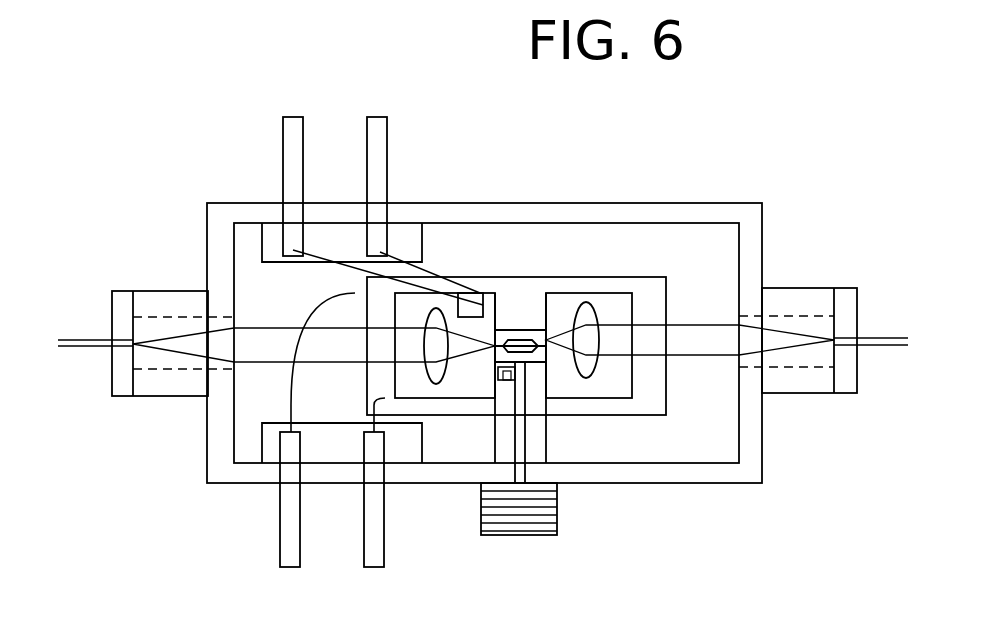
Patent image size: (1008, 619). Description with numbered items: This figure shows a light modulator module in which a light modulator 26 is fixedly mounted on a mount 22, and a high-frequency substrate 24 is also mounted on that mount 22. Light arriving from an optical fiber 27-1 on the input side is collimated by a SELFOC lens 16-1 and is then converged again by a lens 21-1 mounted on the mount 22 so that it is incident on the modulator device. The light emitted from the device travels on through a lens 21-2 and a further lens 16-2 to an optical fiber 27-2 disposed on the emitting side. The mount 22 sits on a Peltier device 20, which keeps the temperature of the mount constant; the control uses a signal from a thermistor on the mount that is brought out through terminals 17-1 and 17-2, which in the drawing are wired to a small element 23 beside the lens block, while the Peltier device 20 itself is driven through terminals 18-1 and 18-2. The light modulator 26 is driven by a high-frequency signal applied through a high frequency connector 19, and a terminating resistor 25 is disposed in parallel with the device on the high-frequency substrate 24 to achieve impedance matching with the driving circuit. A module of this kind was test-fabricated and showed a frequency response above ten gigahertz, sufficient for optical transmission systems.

The SELFOC lens 16-1 is at (167, 302).
The SELFOC lens 16-2 is at (805, 305).
The terminal 17-1 is at (292, 130).
The terminal 17-2 is at (378, 130).
The terminal 18-1 is at (287, 563).
The terminal 18-2 is at (382, 557).
The high frequency connector 19 is at (540, 527).
The Peltier device 20 is at (500, 280).
The lens 21-1 is at (437, 382).
The lens 21-2 is at (590, 378).
The mount 22 is at (567, 302).
The terminal 23 is at (480, 293).
The high-frequency substrate 24 is at (533, 445).
The terminating resistor 25 is at (523, 381).
The light modulator 26 is at (518, 338).
The optical fiber 27-1 is at (82, 348).
The optical fiber 27-2 is at (878, 348).